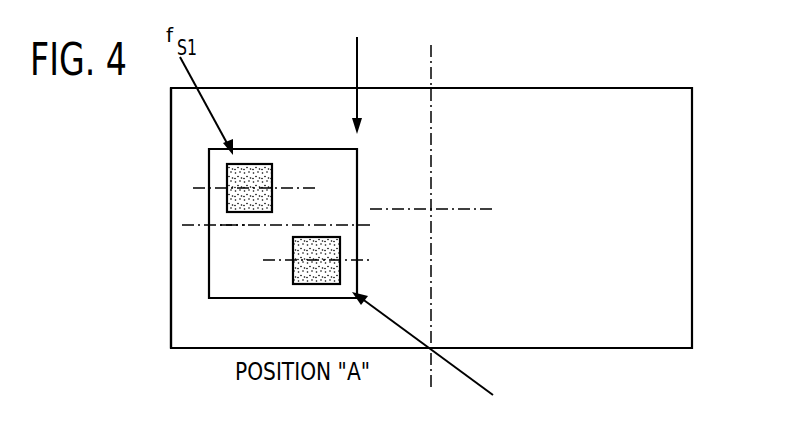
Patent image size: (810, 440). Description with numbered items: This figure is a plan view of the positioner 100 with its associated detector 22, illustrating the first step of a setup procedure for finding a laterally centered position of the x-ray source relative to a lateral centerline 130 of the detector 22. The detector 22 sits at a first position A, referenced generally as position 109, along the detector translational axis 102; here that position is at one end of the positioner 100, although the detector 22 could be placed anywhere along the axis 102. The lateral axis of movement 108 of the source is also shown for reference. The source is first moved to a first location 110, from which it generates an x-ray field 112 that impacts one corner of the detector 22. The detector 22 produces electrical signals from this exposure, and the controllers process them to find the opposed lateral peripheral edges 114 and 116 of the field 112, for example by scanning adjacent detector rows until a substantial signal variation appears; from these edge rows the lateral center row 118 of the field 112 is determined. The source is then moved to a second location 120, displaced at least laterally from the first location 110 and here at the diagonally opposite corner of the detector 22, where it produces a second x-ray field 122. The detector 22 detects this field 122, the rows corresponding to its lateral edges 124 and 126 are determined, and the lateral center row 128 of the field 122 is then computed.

The positioner 100 is at (622, 87).
The first location 110 is at (203, 105).
The detector 22 is at (320, 148).
The x-ray field 112 is at (231, 173).
The lateral peripheral edge 114 is at (250, 163).
The lateral center row 118 is at (288, 188).
The lateral peripheral edge 116 is at (248, 213).
The lateral centerline 130 is at (232, 228).
The second x-ray field 122 is at (327, 278).
The lateral edge 124 is at (316, 237).
The lateral edge 126 is at (300, 285).
The lateral center row 128 is at (279, 262).
The detector translational axis 102 is at (462, 207).
The lateral axis of movement 108 is at (436, 65).
The first position A 109 is at (385, 50).
The second location 120 is at (455, 368).